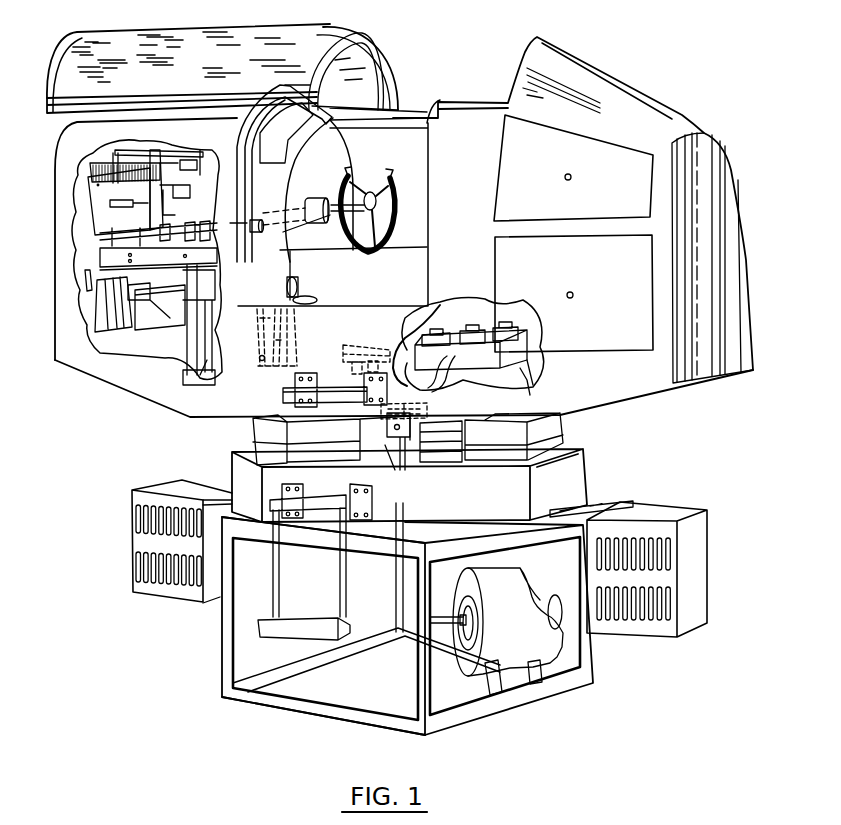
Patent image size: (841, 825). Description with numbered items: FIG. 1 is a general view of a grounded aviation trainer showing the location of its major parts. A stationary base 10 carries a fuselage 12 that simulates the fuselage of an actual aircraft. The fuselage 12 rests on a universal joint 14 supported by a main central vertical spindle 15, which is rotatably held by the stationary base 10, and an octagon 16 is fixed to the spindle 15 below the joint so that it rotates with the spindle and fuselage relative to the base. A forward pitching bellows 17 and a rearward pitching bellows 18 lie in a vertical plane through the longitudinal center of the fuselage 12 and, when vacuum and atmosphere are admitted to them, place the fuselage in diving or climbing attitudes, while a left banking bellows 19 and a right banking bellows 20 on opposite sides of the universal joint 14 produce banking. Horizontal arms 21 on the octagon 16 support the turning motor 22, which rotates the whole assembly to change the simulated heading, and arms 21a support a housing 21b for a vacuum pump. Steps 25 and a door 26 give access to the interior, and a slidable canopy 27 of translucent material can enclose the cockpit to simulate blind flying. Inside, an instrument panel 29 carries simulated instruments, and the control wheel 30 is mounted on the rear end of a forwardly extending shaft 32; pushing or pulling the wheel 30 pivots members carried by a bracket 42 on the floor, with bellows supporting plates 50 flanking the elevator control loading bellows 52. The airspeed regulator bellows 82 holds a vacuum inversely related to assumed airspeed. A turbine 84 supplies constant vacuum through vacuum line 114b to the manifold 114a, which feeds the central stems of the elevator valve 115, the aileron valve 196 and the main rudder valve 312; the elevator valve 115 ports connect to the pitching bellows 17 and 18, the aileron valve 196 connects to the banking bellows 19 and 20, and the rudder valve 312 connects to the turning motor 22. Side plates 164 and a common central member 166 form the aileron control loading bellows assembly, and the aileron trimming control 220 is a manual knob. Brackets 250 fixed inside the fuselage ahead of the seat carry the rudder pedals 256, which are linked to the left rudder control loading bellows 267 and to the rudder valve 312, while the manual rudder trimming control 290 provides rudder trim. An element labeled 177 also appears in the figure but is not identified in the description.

The stationary base 10 is at (528, 693).
The fuselage 12 is at (630, 93).
The universal joint 14 is at (430, 409).
The main central vertical spindle 15 is at (415, 462).
The octagon 16 is at (575, 483).
The forward pitching bellows 17 is at (267, 434).
The rearward pitching bellows 18 is at (550, 430).
The left banking bellows 19 is at (323, 454).
The right banking bellows 20 is at (448, 454).
The horizontal arms 21 is at (222, 499).
The arms 21a is at (578, 515).
The housing 21b is at (700, 544).
The turning motor 22 is at (167, 595).
The steps 25 is at (283, 395).
The door 26 is at (267, 248).
The slidable canopy 27 is at (199, 34).
The instrument panel 29 is at (330, 143).
The control wheel 30 is at (387, 190).
The forwardly extending shaft 32 is at (330, 198).
The bracket 42 is at (177, 355).
The bellows supporting plates 50 is at (173, 330).
The elevator control loading bellows 52 is at (173, 273).
The airspeed regulator bellows 82 is at (364, 342).
The turbine 84 is at (497, 660).
The manifold 114a is at (522, 372).
The vacuum line 114b is at (451, 378).
The elevator valve 115 is at (486, 325).
The side plates 164 is at (103, 210).
The common central member 166 is at (118, 163).
The rail 177 is at (140, 152).
The aileron valve 196 is at (440, 320).
The aileron trimming control 220 is at (299, 282).
The brackets 250 is at (107, 267).
The rudder pedals 256 is at (296, 327).
The left rudder control loading bellows 267 is at (107, 335).
The rudder trimming control 290 is at (317, 302).
The main rudder valve 312 is at (521, 327).